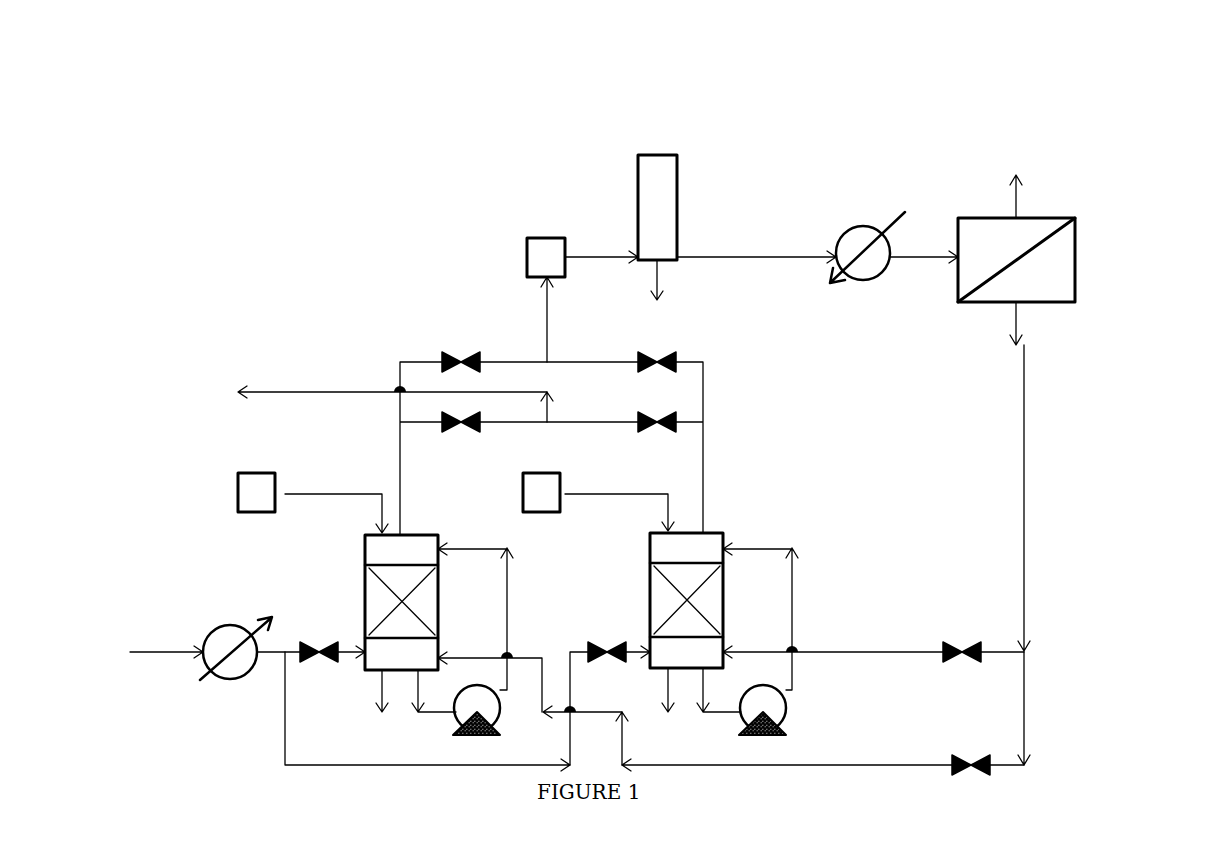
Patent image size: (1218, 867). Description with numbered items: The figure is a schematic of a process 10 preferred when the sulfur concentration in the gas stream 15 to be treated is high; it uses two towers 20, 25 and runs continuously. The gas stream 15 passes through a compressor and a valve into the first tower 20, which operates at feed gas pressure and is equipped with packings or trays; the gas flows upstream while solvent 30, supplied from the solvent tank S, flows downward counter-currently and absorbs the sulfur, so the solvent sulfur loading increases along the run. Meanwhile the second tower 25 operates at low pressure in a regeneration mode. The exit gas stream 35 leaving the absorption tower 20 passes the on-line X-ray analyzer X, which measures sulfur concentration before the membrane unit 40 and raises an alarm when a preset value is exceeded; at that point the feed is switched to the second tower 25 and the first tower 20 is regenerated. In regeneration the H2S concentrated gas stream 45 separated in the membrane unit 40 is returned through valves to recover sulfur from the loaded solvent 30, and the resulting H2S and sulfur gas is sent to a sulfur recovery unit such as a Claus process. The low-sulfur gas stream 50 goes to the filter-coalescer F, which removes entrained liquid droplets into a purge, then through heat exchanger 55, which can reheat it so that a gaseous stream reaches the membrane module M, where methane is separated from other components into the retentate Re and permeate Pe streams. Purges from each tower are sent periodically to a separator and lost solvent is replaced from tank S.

The process 10 is at (1160, 146).
The gas stream 15 is at (170, 645).
The first tower 20 is at (358, 600).
The second tower 25 is at (642, 600).
The solvent 30 is at (320, 494).
The exit gas stream 35 is at (532, 331).
The membrane unit 40 is at (1080, 258).
The H2S concentrated gas stream 45 is at (1032, 552).
The gas stream 50 is at (590, 256).
The heat exchanger 55 is at (866, 226).